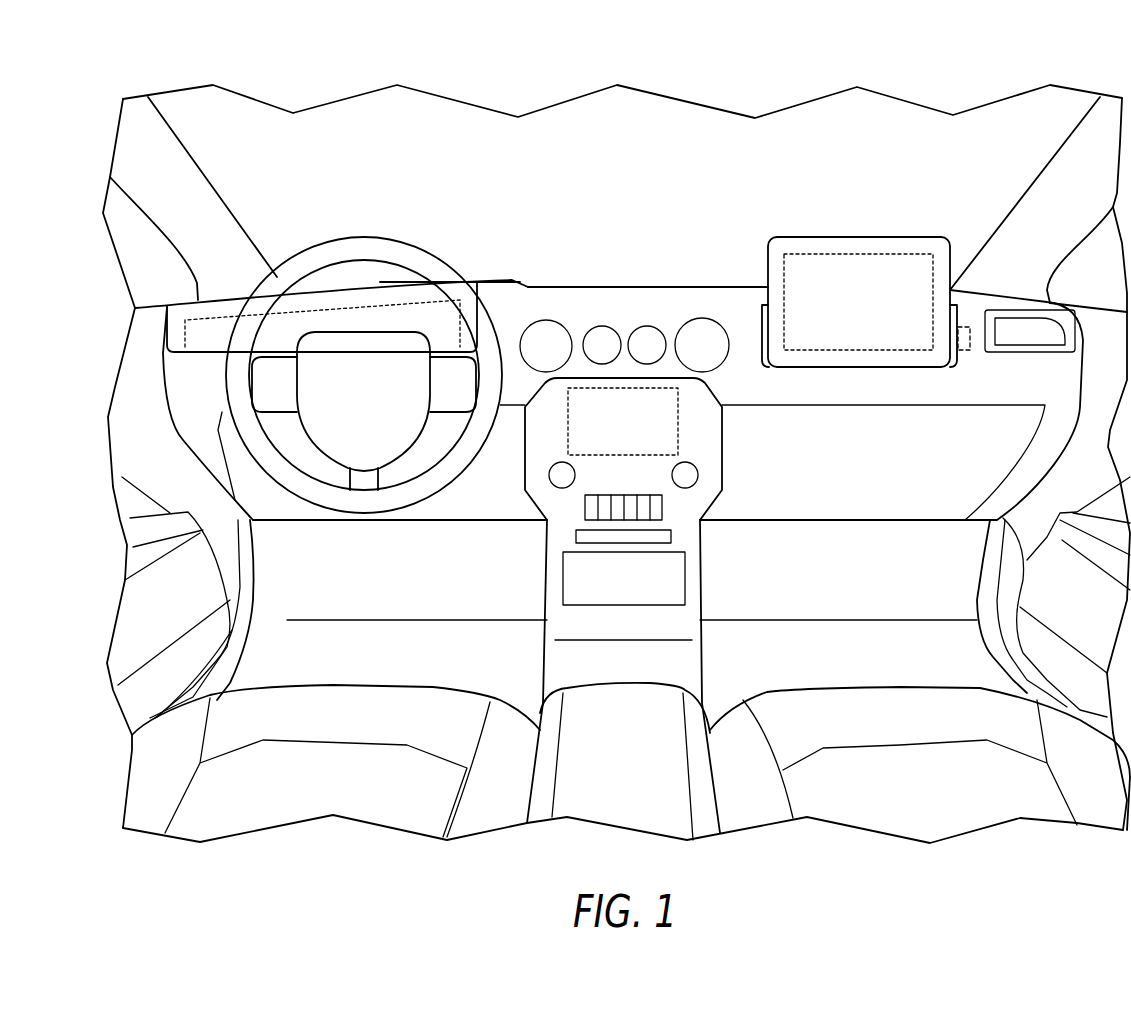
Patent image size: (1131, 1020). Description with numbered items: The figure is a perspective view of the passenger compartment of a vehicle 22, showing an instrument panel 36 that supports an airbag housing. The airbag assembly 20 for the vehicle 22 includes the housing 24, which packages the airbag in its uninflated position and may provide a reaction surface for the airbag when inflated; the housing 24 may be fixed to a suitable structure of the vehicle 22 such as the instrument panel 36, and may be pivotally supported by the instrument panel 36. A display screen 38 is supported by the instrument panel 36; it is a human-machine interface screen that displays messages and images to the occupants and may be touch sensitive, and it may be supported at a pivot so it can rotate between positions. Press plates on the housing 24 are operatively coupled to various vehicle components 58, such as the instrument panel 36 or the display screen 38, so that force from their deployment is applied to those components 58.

The vehicle 22 is at (316, 80).
The assembly 20 is at (737, 237).
The instrument panel 36 is at (622, 300).
The vehicle component 58 is at (912, 243).
The display screen 38 is at (858, 335).
The housing 24 is at (960, 352).